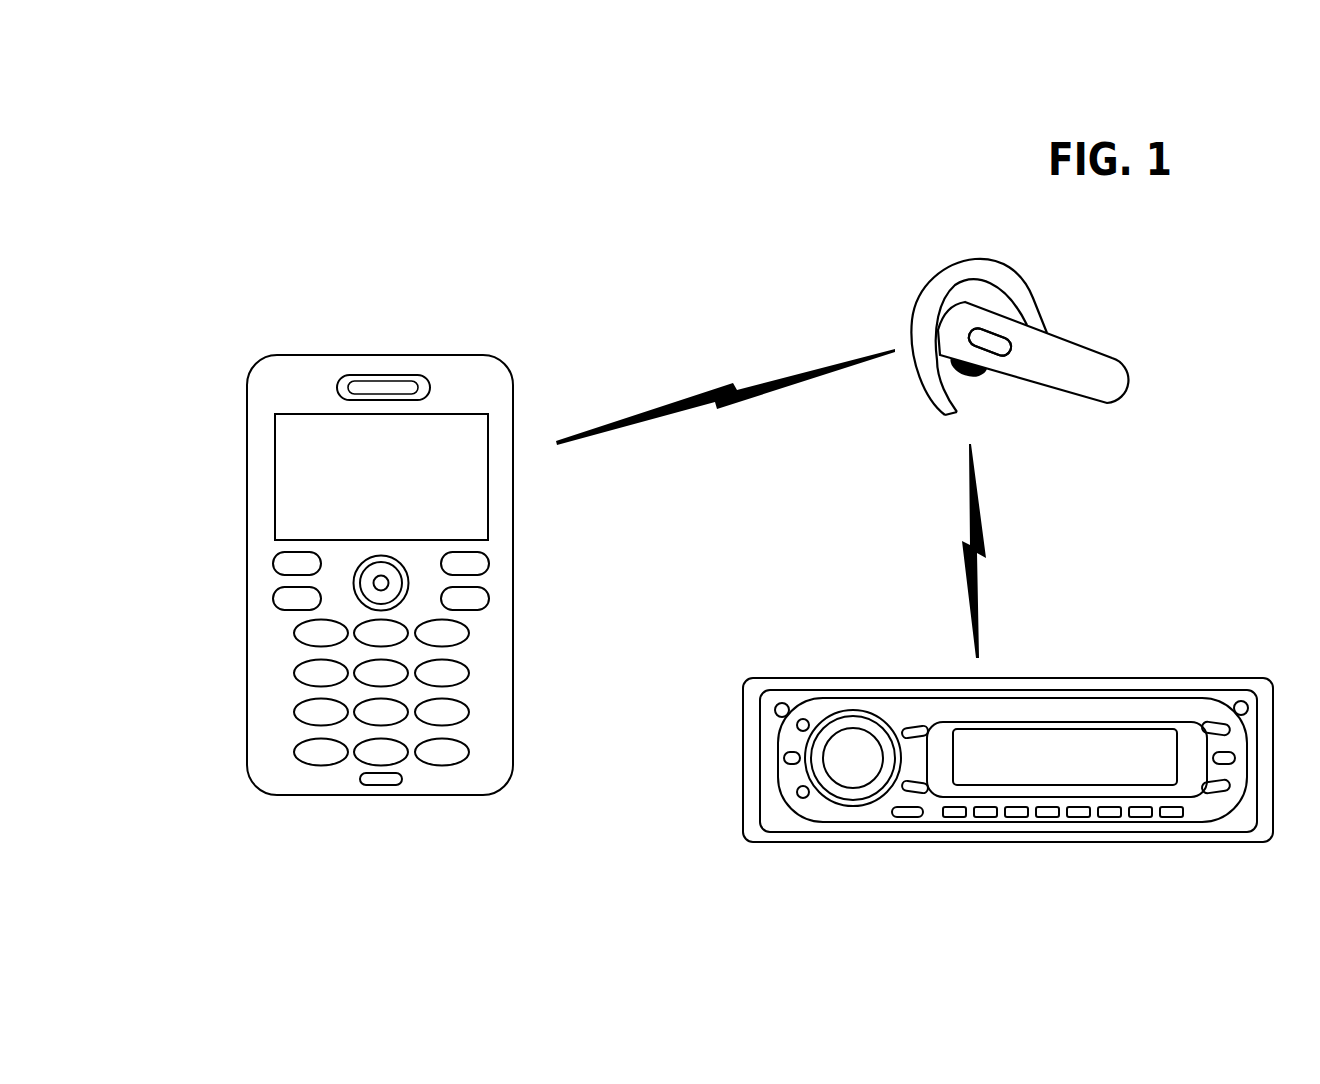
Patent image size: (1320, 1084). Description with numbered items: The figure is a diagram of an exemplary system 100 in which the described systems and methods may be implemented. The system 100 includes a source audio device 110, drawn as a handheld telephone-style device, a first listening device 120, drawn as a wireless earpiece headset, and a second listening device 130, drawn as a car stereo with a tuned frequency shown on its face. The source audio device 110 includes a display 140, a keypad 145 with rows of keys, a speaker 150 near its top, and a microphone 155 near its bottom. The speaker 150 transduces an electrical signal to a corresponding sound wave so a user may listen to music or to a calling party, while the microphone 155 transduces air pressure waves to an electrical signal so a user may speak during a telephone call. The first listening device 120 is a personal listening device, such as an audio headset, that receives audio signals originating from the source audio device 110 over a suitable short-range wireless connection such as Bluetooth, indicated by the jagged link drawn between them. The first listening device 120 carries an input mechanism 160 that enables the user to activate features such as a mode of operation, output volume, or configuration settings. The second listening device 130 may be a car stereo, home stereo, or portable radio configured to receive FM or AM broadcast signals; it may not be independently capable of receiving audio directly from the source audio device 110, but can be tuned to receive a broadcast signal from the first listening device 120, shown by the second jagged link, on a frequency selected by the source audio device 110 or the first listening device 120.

The system 100 is at (270, 181).
The source audio device 110 is at (230, 341).
The first listening device 120 is at (900, 279).
The second listening device 130 is at (918, 840).
The display 140 is at (455, 516).
The keypad 145 is at (300, 770).
The speaker 150 is at (373, 380).
The microphone 155 is at (382, 786).
The input mechanism 160 is at (1010, 345).